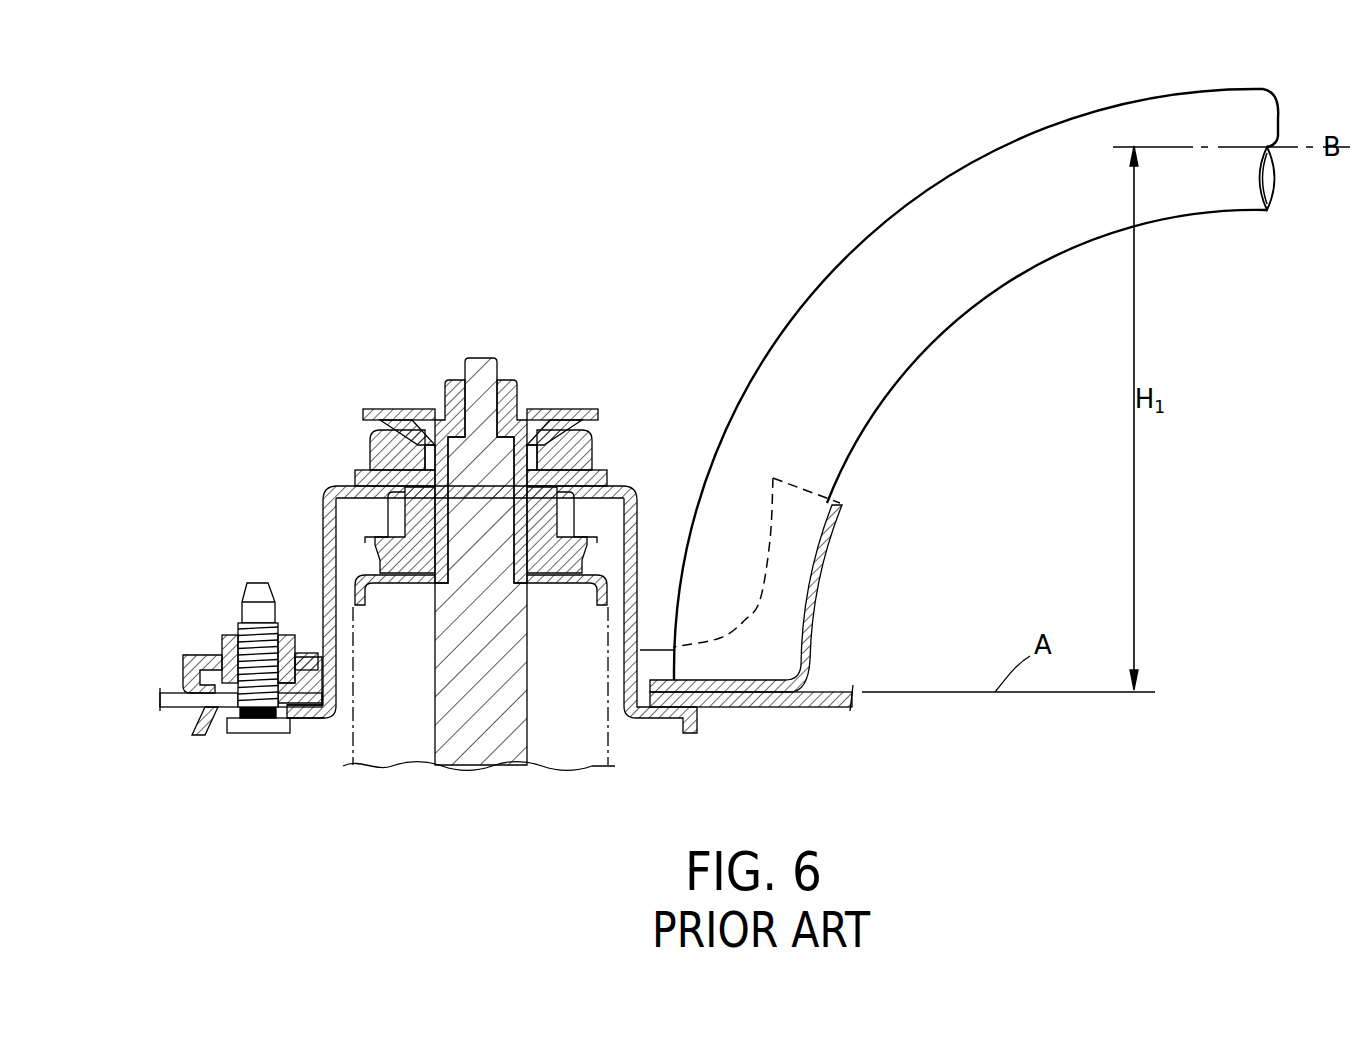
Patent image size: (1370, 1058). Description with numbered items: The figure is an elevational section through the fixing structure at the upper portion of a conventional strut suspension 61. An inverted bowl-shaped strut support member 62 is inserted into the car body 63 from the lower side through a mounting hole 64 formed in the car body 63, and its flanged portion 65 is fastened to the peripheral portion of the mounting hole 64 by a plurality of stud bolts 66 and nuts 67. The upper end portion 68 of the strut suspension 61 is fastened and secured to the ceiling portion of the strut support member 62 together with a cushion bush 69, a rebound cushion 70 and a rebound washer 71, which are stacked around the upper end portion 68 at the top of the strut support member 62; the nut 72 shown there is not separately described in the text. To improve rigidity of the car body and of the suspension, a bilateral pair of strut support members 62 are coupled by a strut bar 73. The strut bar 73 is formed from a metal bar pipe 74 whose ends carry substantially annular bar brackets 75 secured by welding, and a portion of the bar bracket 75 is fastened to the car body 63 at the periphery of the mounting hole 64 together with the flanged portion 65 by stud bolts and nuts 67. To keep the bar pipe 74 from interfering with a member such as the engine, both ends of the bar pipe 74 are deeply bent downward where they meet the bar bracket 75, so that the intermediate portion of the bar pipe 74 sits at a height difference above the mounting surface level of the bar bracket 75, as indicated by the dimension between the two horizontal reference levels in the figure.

The strut suspension 61 is at (385, 765).
The strut support member 62 is at (318, 508).
The car body 63 is at (168, 690).
The mounting hole 64 is at (337, 693).
The flanged portion 65 is at (195, 709).
The stud bolt 66 is at (257, 734).
The nut 67 is at (233, 660).
The upper end portion 68 is at (483, 358).
The cushion bush 69 is at (580, 557).
The rebound cushion 70 is at (592, 443).
The rebound washer 71 is at (552, 409).
The nut 72 is at (520, 382).
The strut bar 73 is at (402, 410).
The bar pipe 74 is at (906, 371).
The bar bracket 75 is at (820, 581).